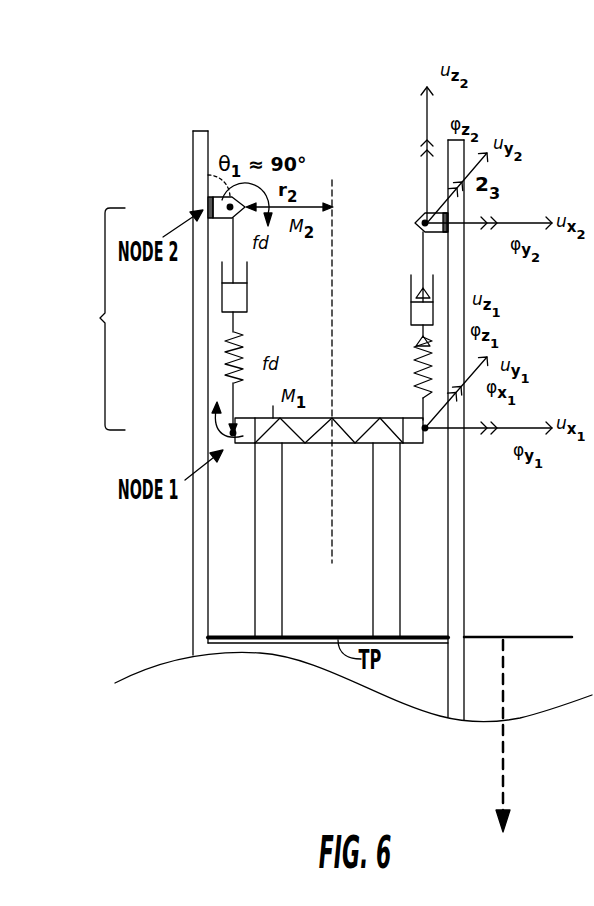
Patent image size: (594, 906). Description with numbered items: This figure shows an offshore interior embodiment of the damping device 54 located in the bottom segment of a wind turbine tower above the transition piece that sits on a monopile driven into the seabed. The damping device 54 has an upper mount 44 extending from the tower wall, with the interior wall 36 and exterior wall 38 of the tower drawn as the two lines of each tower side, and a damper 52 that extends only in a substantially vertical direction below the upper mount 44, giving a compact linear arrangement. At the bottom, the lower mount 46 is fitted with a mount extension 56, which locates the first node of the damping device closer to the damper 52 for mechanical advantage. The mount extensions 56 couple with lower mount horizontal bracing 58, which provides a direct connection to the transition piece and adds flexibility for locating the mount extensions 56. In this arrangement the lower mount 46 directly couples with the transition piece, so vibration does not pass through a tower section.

The interior wall 36 is at (208, 572).
The exterior wall 38 is at (193, 558).
The upper mount 44 is at (220, 200).
The lower mount 46 is at (246, 437).
The damper 52 is at (240, 300).
The damping device 54 is at (100, 319).
The mount extension 56 is at (282, 540).
The lower mount horizontal bracing 58 is at (349, 428).